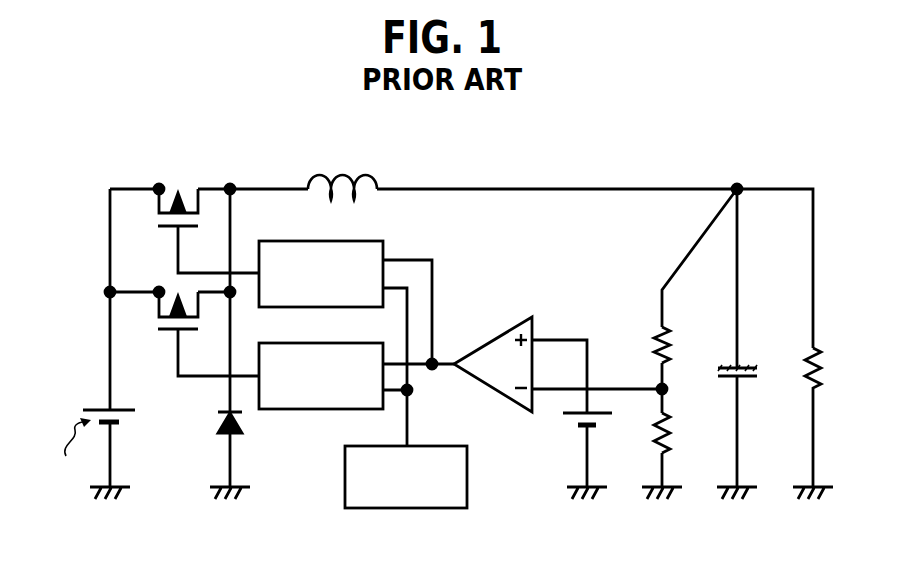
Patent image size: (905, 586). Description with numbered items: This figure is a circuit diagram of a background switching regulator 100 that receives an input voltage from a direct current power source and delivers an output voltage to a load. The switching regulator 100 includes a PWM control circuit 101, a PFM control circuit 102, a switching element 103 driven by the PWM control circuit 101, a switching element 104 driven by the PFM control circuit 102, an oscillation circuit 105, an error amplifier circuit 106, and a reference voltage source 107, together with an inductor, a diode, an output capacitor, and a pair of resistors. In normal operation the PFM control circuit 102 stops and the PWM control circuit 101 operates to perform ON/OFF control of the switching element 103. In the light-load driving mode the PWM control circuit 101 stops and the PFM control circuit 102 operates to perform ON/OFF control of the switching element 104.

The switching regulator 100 is at (651, 173).
The PWM control circuit 101 is at (348, 241).
The PFM control circuit 102 is at (303, 409).
The switching element 103 is at (188, 179).
The switching element 104 is at (152, 323).
The oscillation circuit 105 is at (440, 446).
The error amplifier circuit 106 is at (507, 323).
The reference voltage source 107 is at (562, 425).